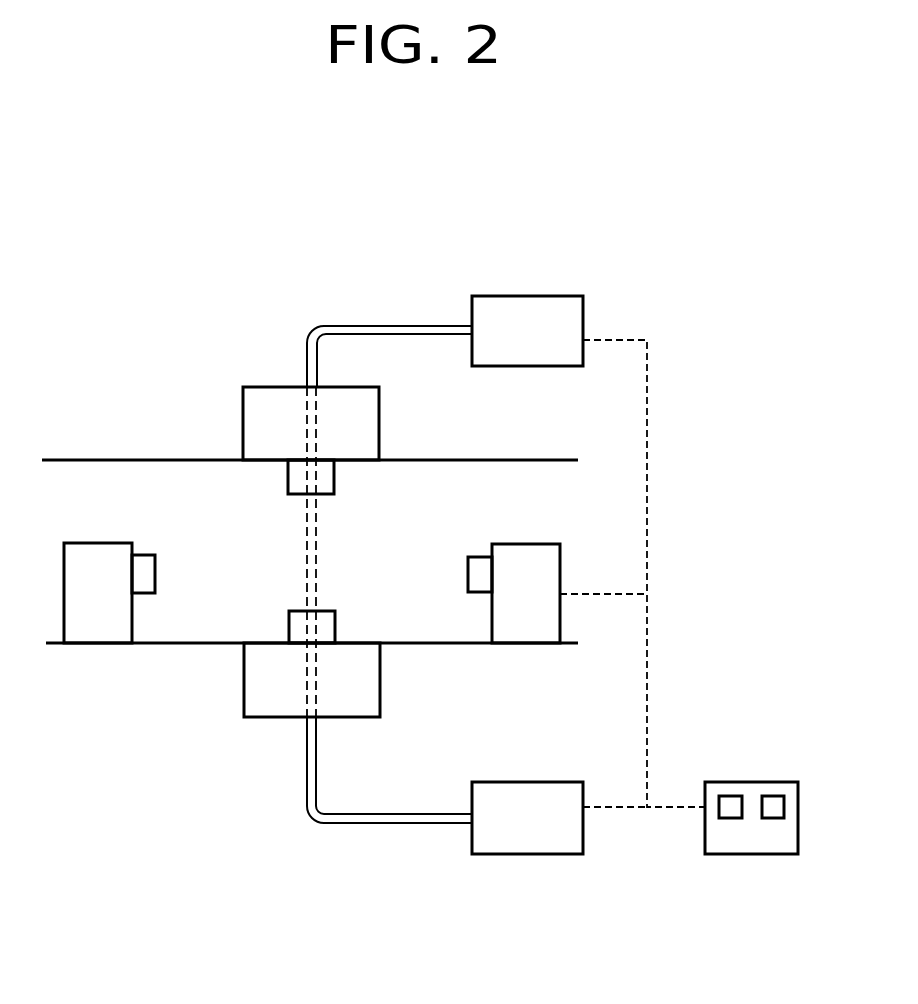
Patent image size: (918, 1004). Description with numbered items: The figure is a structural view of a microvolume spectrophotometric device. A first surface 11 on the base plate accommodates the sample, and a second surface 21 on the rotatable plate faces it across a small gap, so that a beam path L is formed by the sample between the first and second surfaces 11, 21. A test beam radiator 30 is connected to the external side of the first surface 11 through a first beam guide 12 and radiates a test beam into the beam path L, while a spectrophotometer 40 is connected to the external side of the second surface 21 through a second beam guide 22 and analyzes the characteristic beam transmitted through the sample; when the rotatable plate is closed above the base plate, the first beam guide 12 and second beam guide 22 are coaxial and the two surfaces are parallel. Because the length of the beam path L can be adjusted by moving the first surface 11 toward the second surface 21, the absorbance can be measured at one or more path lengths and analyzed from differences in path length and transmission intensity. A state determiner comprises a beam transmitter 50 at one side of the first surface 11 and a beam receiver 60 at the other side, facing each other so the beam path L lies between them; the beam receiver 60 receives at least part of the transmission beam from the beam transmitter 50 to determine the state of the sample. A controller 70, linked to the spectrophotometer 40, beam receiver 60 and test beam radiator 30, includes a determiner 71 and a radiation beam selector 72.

The first surface 11 is at (289, 626).
The first beam guide 12 is at (393, 823).
The second surface 21 is at (288, 479).
The second beam guide 22 is at (402, 326).
The test beam radiator 30 is at (527, 854).
The spectrophotometer 40 is at (528, 296).
The beam transmitter 50 is at (145, 555).
The beam receiver 60 is at (479, 557).
The controller 70 is at (750, 854).
The determiner 71 is at (730, 796).
The radiation beam selector 72 is at (775, 796).
The beam path L is at (318, 565).